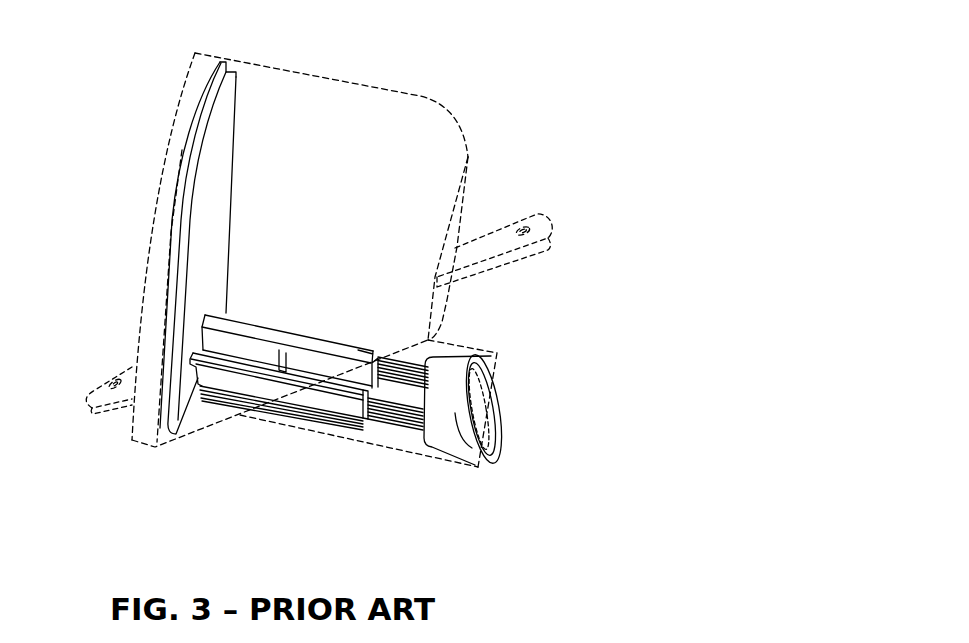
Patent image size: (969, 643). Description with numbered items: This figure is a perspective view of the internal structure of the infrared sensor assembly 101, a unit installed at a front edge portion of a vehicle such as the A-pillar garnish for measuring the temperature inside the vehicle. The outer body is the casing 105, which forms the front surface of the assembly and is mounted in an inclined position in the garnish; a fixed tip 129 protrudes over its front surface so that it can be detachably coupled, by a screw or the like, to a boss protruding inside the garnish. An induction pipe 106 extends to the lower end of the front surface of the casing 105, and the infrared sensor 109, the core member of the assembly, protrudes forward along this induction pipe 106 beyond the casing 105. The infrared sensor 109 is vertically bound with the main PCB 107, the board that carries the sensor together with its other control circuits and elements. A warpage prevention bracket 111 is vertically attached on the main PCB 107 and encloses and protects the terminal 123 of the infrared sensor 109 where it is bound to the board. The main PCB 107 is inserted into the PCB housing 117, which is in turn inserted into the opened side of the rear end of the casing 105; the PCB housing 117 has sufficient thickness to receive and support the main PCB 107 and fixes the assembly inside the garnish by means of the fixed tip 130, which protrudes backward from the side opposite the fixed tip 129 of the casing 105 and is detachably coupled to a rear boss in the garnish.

The infrared sensor assembly 101 is at (514, 155).
The casing 105 is at (310, 78).
The induction pipe 106 is at (445, 462).
The main PCB 107 is at (217, 190).
The infrared sensor 109 is at (488, 445).
The warpage prevention bracket 111 is at (323, 403).
The PCB housing 117 is at (137, 334).
The terminal 123 is at (383, 423).
The fixed tip 129 is at (490, 263).
The fixed tip 130 is at (91, 410).